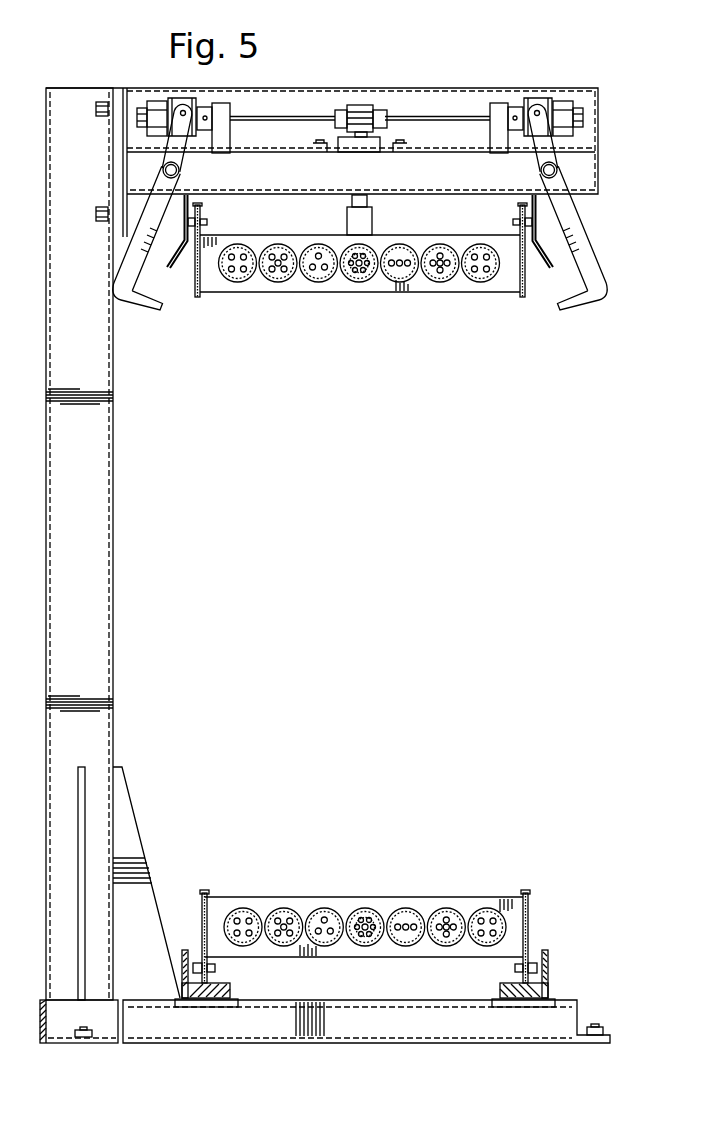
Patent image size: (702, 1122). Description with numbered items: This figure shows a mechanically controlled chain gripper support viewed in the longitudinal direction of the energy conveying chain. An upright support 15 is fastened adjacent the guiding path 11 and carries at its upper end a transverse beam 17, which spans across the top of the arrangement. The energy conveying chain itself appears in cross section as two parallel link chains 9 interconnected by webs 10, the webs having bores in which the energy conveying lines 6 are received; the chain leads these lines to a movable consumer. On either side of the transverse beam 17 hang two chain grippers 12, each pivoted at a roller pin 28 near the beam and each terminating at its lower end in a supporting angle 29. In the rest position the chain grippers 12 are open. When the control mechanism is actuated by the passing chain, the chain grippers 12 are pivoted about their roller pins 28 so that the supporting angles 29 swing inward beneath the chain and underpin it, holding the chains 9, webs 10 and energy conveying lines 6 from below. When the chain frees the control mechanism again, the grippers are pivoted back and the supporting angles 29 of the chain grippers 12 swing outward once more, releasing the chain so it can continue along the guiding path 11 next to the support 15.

The energy conveying lines 6 is at (313, 282).
The chains 9 is at (197, 298).
The webs 10 is at (378, 287).
The guiding path 11 is at (552, 967).
The chain gripper 12 is at (157, 207).
The support 15 is at (102, 588).
The transverse beam 17 is at (443, 93).
The roller pins 28 is at (163, 169).
The supporting angle 29 is at (130, 304).